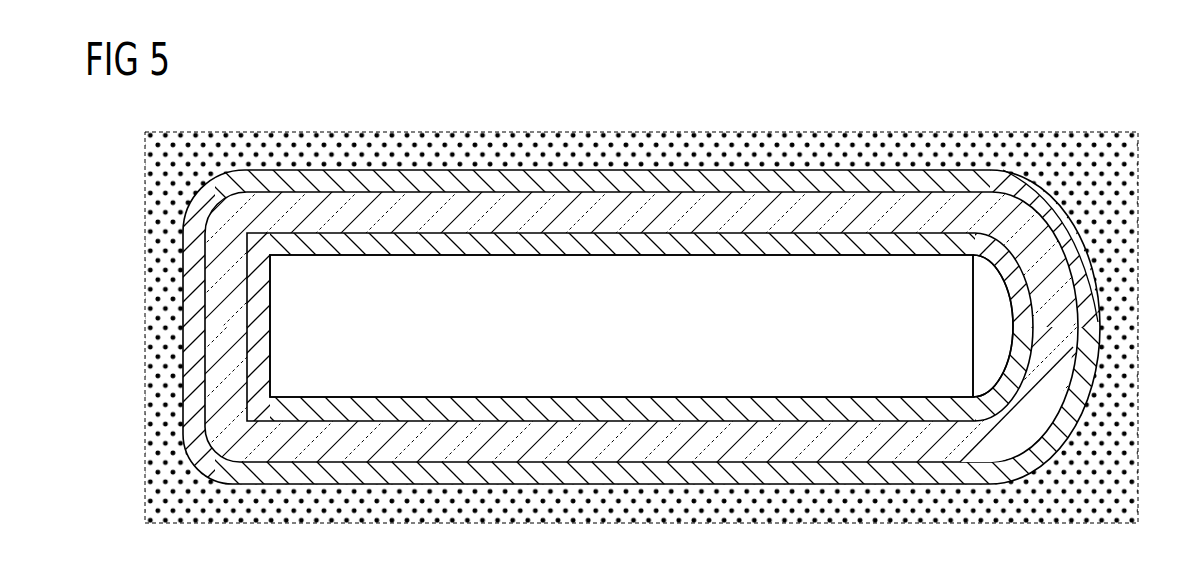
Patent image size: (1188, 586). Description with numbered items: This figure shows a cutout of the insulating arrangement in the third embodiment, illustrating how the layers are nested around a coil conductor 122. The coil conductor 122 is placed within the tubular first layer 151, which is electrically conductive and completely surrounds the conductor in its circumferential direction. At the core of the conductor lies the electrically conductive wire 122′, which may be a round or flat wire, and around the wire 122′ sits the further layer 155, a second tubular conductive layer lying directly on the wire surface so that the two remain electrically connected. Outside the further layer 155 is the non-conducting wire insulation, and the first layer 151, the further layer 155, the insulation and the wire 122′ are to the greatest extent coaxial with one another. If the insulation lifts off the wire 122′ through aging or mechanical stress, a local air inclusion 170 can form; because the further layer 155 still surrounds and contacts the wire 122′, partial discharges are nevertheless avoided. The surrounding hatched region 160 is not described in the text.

The coil conductor 122 is at (1090, 97).
The electrically conductive wire 122′ is at (700, 290).
The first layer 151 is at (598, 187).
The further layer 155 is at (570, 410).
The encapsulation layer 160 is at (372, 145).
The local air inclusion 170 is at (987, 328).